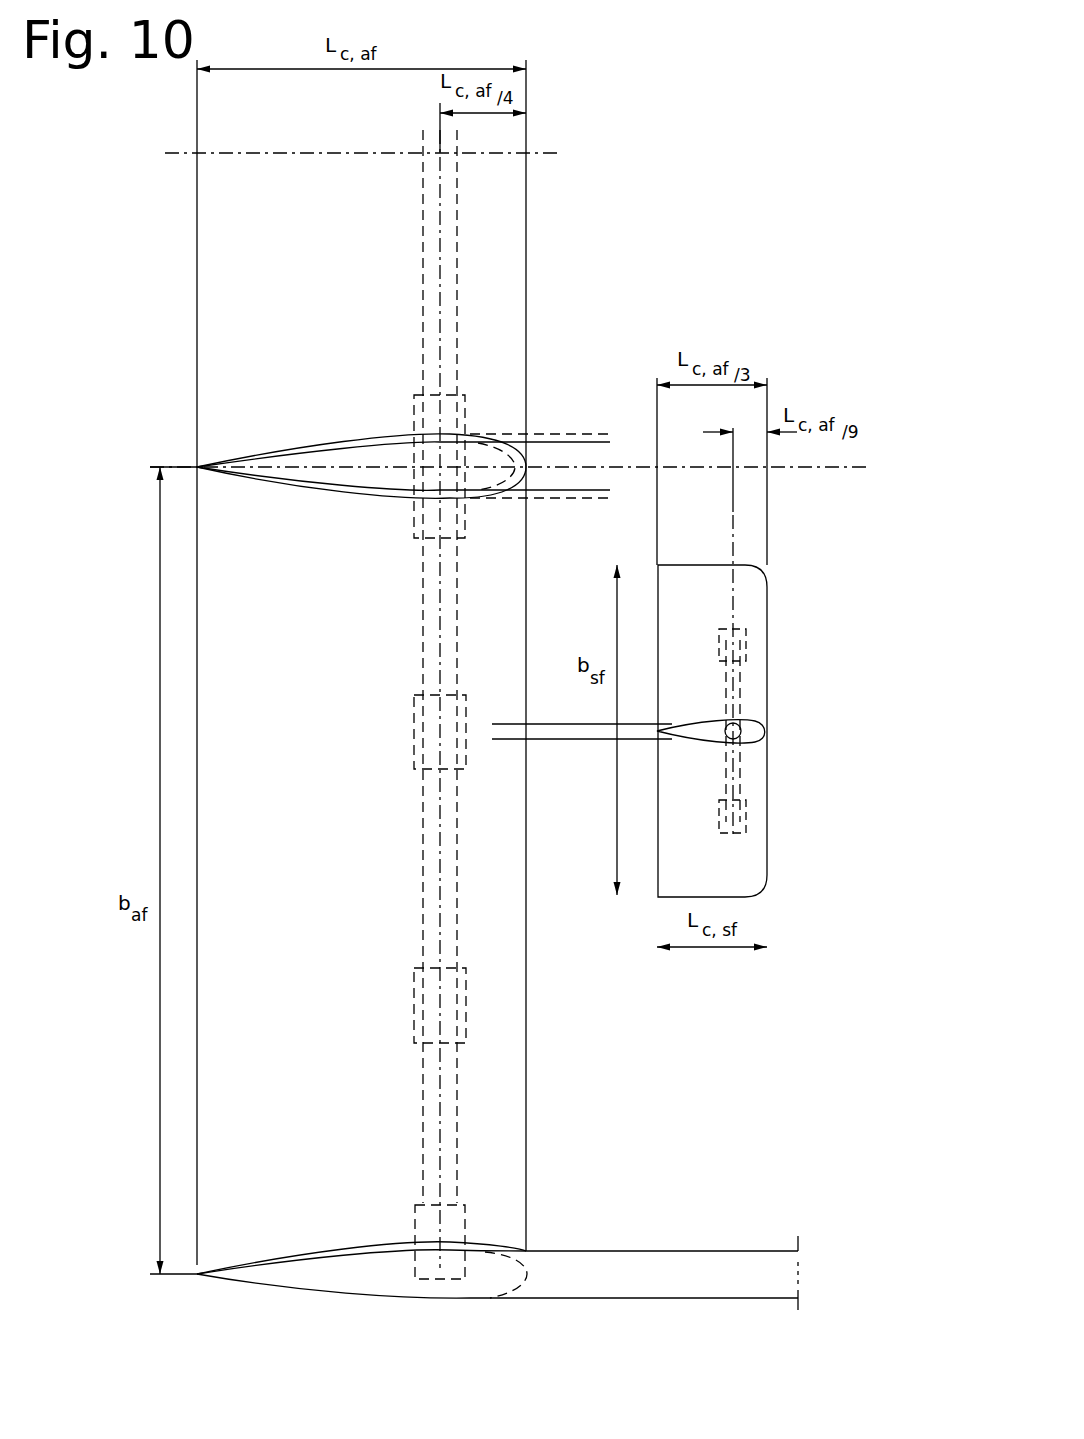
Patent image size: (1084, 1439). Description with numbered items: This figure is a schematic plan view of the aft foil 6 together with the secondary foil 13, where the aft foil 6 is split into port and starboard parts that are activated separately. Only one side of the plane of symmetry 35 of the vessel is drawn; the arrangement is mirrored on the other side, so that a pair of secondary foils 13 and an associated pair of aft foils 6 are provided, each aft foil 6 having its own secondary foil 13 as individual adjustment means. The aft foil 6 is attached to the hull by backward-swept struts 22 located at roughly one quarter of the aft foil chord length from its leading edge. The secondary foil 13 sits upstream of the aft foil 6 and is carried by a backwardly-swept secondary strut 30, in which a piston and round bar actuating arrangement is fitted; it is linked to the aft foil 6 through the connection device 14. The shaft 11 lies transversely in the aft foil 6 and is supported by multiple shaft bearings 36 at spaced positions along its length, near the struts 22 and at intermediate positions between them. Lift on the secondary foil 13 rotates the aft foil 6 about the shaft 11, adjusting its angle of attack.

The aft foil 6 is at (242, 340).
The struts 22 is at (258, 457).
The plane of symmetry 35 is at (808, 466).
The secondary foil 13 is at (750, 608).
The secondary strut 30 is at (750, 740).
The connection device 14 is at (604, 733).
The shaft bearings 36 is at (458, 1011).
The shaft 11 is at (455, 1106).